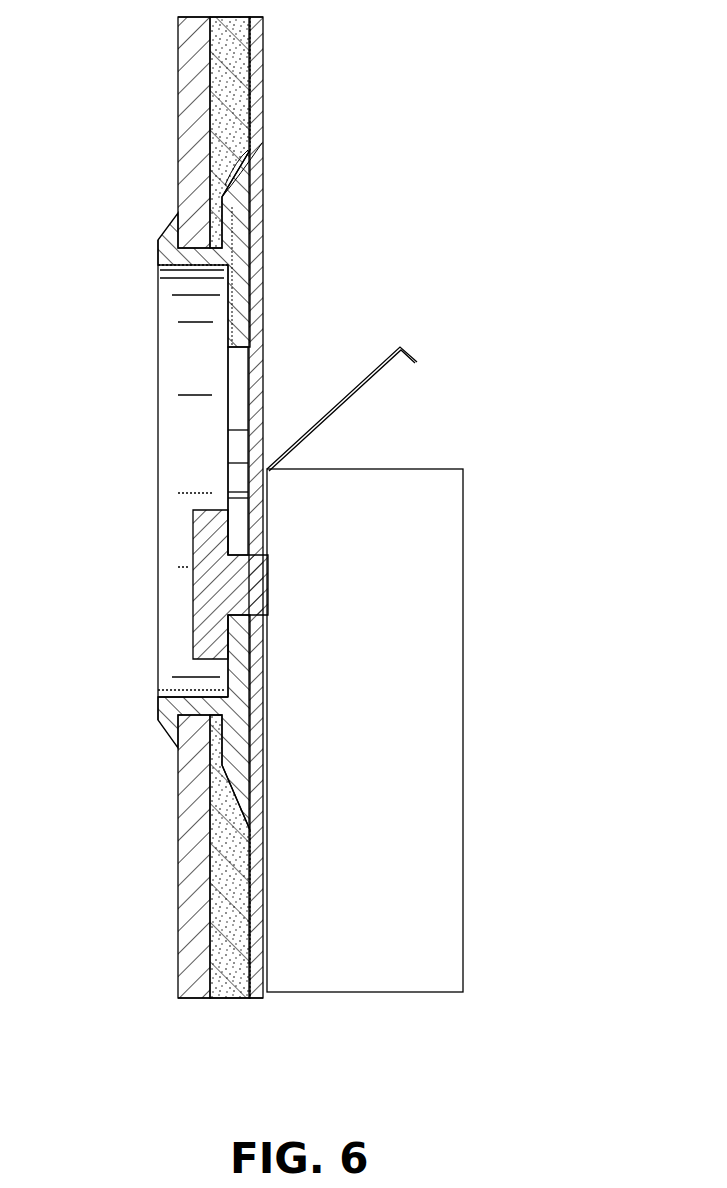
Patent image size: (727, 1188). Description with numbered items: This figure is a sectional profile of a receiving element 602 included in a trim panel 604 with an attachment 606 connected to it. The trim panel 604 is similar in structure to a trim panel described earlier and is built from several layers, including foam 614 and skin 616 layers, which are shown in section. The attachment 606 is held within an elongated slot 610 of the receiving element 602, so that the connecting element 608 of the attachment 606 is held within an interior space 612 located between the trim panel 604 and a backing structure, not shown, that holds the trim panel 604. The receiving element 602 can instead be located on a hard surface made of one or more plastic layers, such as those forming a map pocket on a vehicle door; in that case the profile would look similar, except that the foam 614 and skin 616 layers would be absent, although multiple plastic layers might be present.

The receiving element 602 is at (336, 490).
The trim panel 604 is at (263, 1003).
The attachment 606 is at (457, 708).
The connecting element 608 is at (192, 596).
The elongated slot 610 is at (391, 389).
The interior space 612 is at (172, 521).
The foam layer 614 is at (222, 928).
The skin layer 616 is at (255, 990).